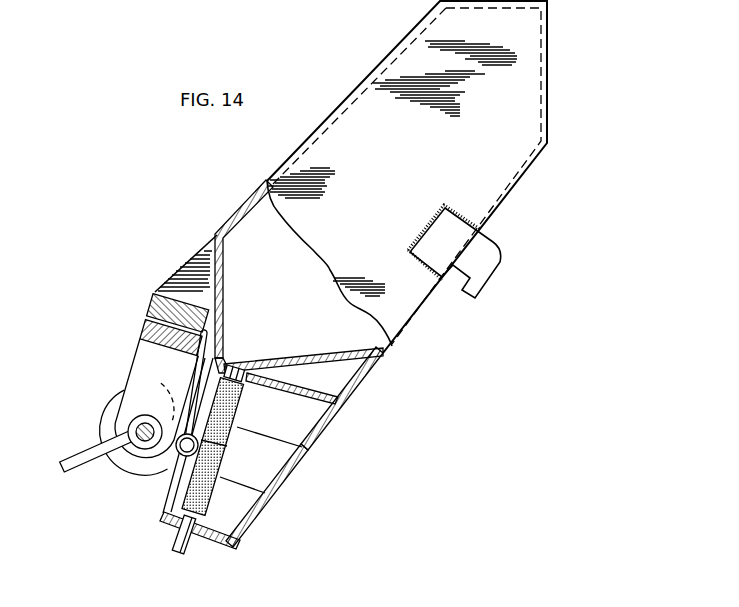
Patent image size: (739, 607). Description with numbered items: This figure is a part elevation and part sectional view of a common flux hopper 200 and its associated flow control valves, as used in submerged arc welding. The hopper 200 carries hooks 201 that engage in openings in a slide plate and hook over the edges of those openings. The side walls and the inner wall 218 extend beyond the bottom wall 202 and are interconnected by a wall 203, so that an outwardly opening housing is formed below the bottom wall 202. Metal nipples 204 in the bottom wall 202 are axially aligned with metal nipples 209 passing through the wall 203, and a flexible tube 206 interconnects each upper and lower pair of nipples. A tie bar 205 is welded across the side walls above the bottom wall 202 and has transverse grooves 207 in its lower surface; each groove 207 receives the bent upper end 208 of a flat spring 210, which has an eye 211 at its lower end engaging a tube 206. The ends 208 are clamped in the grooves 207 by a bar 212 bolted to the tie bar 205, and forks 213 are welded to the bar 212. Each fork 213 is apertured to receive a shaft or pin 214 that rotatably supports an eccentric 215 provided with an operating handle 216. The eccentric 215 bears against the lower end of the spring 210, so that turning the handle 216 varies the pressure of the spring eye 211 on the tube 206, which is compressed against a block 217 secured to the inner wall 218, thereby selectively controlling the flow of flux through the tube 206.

The flux hopper 200 is at (413, 197).
The hook 201 is at (488, 258).
The bottom wall 202 is at (370, 379).
The wall 203 is at (218, 534).
The metal nipple 204 is at (235, 370).
The tie bar 205 is at (170, 305).
The flexible tube 206 is at (183, 493).
The transverse groove 207 is at (207, 313).
The bent upper end 208 is at (179, 393).
The metal nipple 209 is at (173, 538).
The flat spring 210 is at (170, 386).
The eye 211 is at (226, 442).
The bar 212 is at (146, 323).
The fork 213 is at (138, 377).
The shaft or pin 214 is at (147, 441).
The eccentric 215 is at (108, 420).
The operating handle 216 is at (75, 453).
The block 217 is at (243, 441).
The inner wall 218 is at (287, 481).